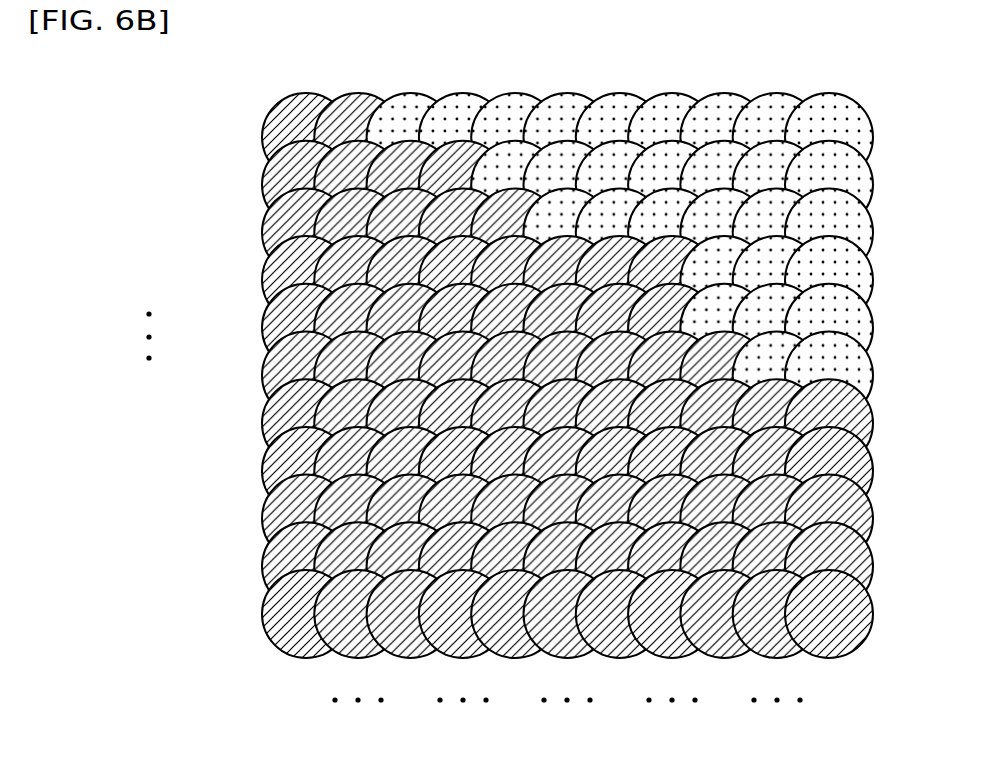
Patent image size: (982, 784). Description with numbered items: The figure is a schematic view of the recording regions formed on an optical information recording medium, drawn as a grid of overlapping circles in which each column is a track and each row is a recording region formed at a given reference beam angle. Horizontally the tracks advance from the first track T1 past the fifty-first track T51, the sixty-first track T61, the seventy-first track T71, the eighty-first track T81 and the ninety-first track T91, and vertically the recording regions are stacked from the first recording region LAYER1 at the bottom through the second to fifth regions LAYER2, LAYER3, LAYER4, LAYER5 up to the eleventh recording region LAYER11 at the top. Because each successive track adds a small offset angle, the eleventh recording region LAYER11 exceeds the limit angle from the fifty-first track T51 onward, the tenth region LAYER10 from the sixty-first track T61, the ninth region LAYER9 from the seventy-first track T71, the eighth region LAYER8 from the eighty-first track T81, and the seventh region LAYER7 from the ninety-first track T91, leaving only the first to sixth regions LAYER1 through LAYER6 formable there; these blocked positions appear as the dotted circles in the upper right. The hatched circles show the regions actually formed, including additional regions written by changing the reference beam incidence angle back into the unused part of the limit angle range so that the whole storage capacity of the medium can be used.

The first recording region layer LAYER1 is at (255, 617).
The second recording region layer LAYER2 is at (255, 569).
The third recording region layer LAYER3 is at (255, 520).
The fourth recording region layer LAYER4 is at (255, 472).
The fifth recording region layer LAYER5 is at (567, 423).
The sixth recording region layer LAYER6 is at (567, 376).
The seventh recording region layer LAYER7 is at (567, 328).
The eighth recording region layer LAYER8 is at (567, 280).
The ninth recording region layer LAYER9 is at (567, 232).
The tenth recording region layer LAYER10 is at (255, 181).
The eleventh recording region layer LAYER11 is at (255, 133).
The first track T1 is at (306, 663).
The fifty-first track T51 is at (411, 663).
The sixty-first track T61 is at (515, 663).
The seventy-first track T71 is at (620, 663).
The eighty-first track T81 is at (724, 663).
The ninety-first track T91 is at (829, 663).